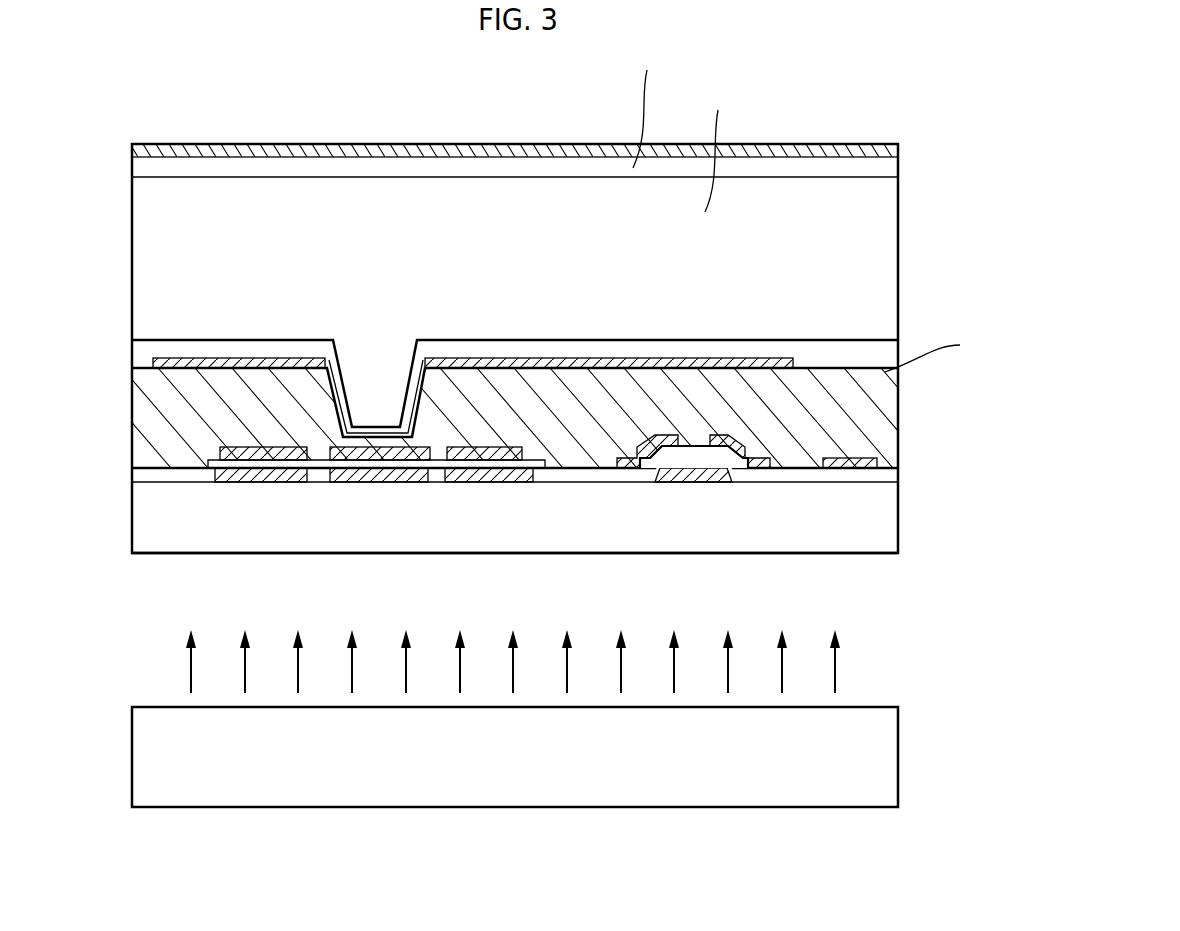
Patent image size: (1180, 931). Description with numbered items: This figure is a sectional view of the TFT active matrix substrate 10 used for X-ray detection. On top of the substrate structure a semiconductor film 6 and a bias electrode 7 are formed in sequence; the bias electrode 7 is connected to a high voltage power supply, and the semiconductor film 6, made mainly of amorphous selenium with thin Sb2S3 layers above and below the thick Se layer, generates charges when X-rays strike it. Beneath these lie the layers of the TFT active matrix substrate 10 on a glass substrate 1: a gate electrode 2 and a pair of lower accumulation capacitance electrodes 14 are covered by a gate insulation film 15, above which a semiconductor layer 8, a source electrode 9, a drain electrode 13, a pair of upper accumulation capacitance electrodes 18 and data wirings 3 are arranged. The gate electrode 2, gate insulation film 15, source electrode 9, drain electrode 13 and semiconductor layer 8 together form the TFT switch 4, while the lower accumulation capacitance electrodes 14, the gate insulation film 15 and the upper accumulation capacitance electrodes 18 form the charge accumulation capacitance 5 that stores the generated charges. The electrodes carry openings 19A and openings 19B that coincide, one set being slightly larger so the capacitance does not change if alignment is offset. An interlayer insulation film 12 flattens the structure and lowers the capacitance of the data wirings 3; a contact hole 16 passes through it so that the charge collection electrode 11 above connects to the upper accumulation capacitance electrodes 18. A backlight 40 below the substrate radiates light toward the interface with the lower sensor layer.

The glass substrate 1 is at (482, 525).
The gate electrode 2 is at (687, 476).
The data wirings 3 is at (858, 468).
The TFT switch 4 is at (670, 494).
The charge accumulation capacitance 5 is at (340, 494).
The semiconductor film 6 is at (905, 158).
The bias electrode 7 is at (898, 150).
The semiconductor layer 8 is at (707, 452).
The source electrode 9 is at (762, 468).
The TFT active matrix substrate 10 is at (954, 370).
The charge collection electrode 11 is at (285, 362).
The interlayer insulation film 12 is at (215, 393).
The drain electrode 13 is at (630, 470).
The lower accumulation capacitance electrodes 14 is at (360, 484).
The gate insulation film 15 is at (588, 470).
The contact hole 16 is at (381, 380).
The upper accumulation capacitance electrodes 18 is at (230, 462).
The openings 19A is at (432, 470).
The openings 19B is at (308, 470).
The backlight 40 is at (898, 748).